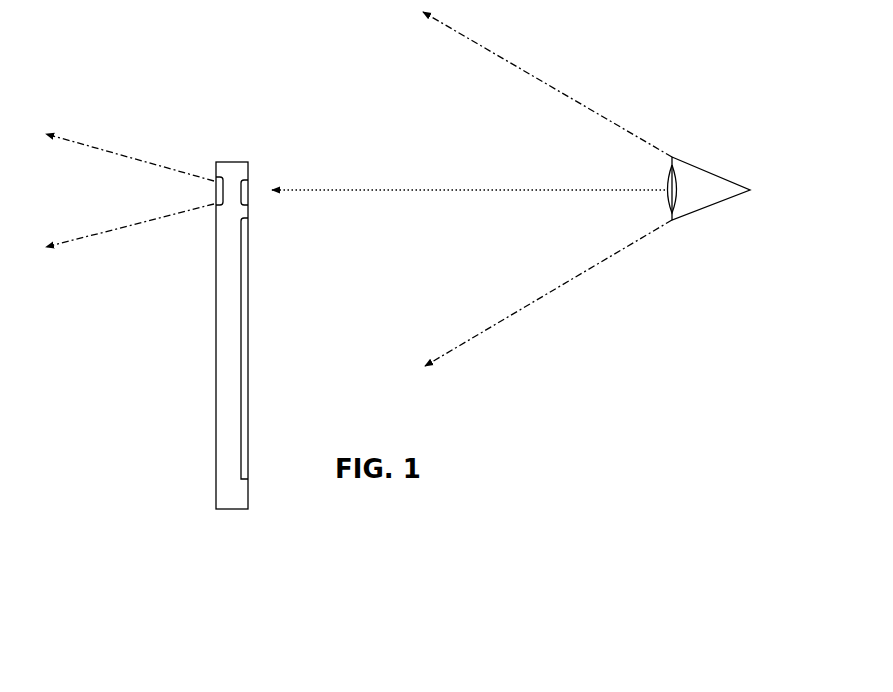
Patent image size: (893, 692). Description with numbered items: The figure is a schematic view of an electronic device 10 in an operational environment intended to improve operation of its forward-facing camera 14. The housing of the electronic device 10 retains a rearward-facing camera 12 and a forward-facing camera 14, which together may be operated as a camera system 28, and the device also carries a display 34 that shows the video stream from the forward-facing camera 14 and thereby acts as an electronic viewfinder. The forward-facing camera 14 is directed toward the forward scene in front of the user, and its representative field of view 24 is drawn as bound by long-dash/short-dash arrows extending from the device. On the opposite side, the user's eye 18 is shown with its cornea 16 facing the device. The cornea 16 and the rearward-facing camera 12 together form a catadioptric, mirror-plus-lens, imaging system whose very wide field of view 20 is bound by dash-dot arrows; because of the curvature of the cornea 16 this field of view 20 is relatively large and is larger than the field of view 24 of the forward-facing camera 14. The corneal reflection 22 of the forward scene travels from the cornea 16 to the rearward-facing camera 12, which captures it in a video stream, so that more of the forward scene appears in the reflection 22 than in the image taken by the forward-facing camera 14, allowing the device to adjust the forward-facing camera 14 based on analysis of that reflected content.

The electronic device 10 is at (232, 510).
The rearward-facing camera 12 is at (250, 185).
The forward-facing camera 14 is at (215, 193).
The cornea 16 is at (668, 196).
The user's eye 18 is at (702, 198).
The field of view 20 is at (475, 232).
The corneal reflection 22 is at (402, 192).
The field of view of the forward-facing camera 24 is at (130, 190).
The camera system 28 is at (278, 162).
The display 34 is at (248, 290).